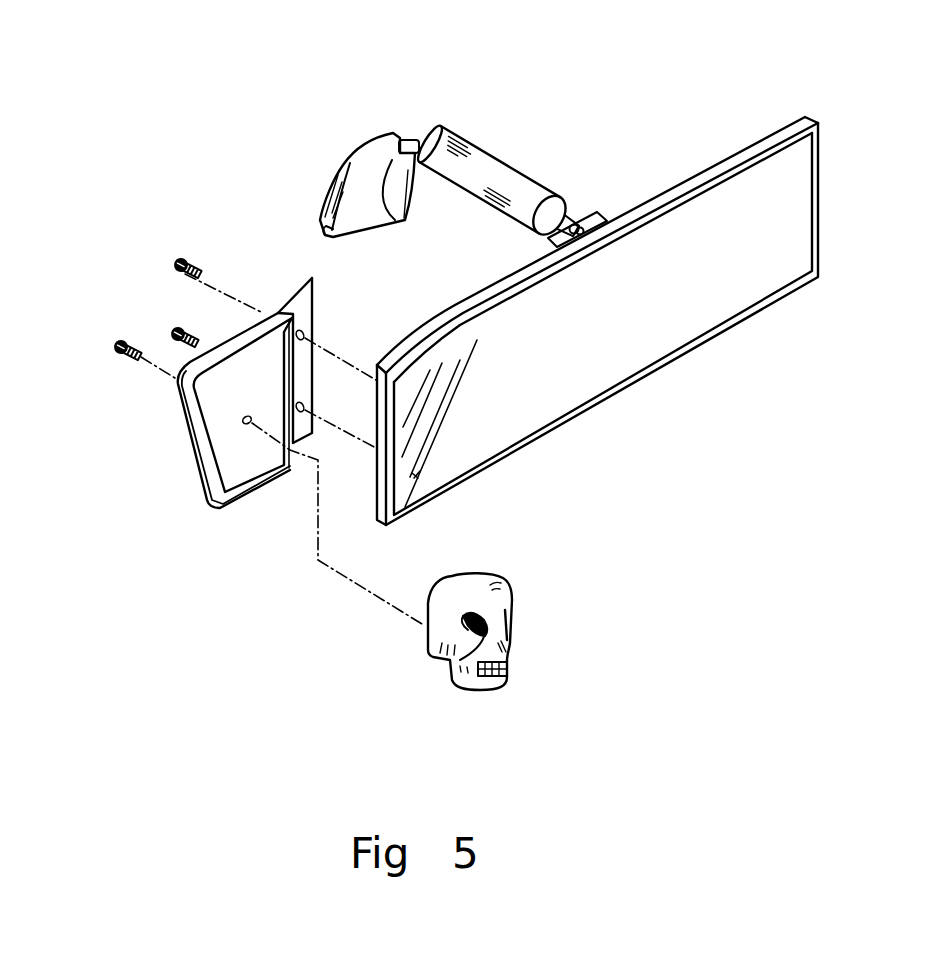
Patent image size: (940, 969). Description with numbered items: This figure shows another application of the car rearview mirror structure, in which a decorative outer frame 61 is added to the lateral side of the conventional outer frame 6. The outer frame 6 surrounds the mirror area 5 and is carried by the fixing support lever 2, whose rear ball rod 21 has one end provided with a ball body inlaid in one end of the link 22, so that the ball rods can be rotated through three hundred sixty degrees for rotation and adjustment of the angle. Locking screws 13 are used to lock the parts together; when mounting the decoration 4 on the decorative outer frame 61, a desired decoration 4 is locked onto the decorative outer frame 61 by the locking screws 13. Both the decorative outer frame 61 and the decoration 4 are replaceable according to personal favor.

The fixing support lever 2 is at (345, 148).
The rear ball rod 21 is at (422, 137).
The link 22 is at (492, 170).
The outer frame 6 is at (817, 143).
The mirror 5 is at (748, 252).
The locking screw 13 is at (572, 232).
The decorative outer frame 61 is at (197, 438).
The decoration 4 is at (496, 602).